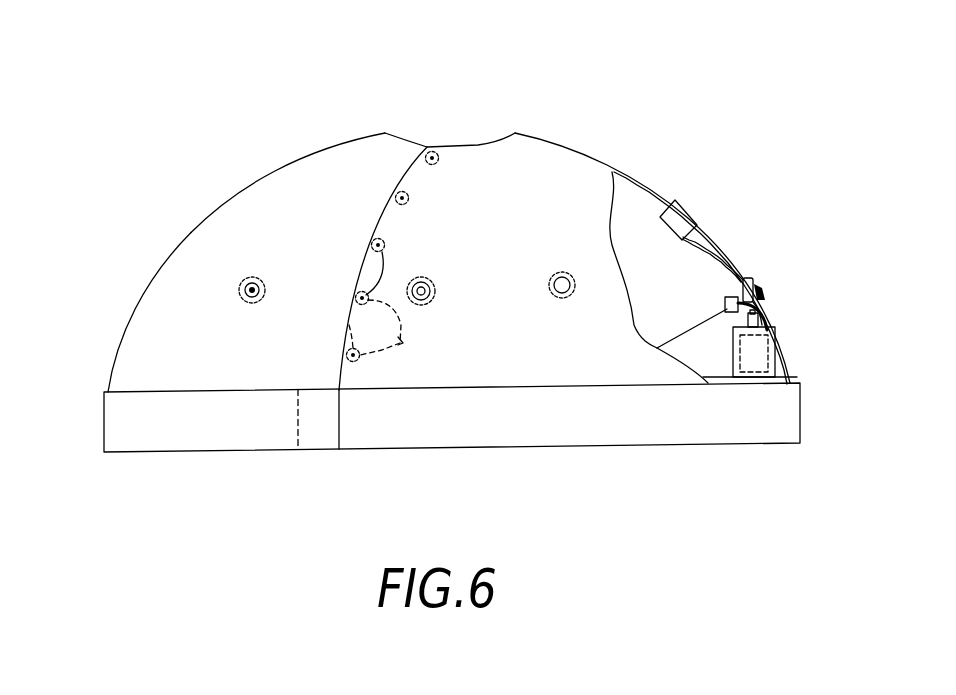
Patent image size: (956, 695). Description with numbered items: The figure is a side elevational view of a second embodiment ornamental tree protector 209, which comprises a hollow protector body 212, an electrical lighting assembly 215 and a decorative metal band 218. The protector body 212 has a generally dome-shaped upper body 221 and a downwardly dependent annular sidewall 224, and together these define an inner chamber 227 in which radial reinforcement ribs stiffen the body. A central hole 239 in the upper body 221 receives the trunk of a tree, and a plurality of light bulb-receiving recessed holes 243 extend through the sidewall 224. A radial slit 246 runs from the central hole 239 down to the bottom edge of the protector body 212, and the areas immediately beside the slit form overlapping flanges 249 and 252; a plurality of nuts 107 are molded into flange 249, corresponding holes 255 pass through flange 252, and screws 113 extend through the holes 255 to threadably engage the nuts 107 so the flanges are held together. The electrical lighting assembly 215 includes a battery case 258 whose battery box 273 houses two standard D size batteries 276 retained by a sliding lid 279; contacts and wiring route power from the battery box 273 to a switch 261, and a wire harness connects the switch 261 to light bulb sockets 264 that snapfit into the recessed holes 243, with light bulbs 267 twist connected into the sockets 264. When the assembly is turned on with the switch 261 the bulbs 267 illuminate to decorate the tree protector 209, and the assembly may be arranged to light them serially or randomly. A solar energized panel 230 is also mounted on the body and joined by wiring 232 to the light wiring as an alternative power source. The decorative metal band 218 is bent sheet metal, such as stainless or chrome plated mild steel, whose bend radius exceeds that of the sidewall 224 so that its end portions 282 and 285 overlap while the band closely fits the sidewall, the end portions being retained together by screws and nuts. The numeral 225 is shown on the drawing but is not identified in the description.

The ornamental tree protector 209 is at (712, 52).
The upper body 221 is at (308, 156).
The annular sidewall 224 is at (167, 258).
The central hole 239 is at (477, 142).
The protector body 212 is at (672, 258).
The radial slit 246 is at (369, 227).
The screws 113 is at (385, 246).
The holes 255 is at (345, 324).
The nuts 107 is at (398, 339).
The recessed holes 243 is at (261, 279).
The light bulb sockets 264 is at (240, 295).
The light bulbs 267 is at (250, 303).
The solar energized panel 230 is at (661, 216).
The wiring 232 is at (700, 261).
The inner chamber 227 is at (667, 263).
The sliding lid 279 is at (712, 330).
The switch 261 is at (777, 332).
The battery box 273 is at (782, 360).
The electrical lighting assembly 215 is at (795, 286).
The battery case 258 is at (722, 348).
The decorative metal band 218 is at (94, 412).
The end portion 282 is at (297, 407).
The end portion 285 is at (340, 421).
The batteries 276 is at (697, 385).
The headband lower edge 225 is at (137, 453).
The flange 249 is at (322, 453).
The flange 252 is at (356, 452).